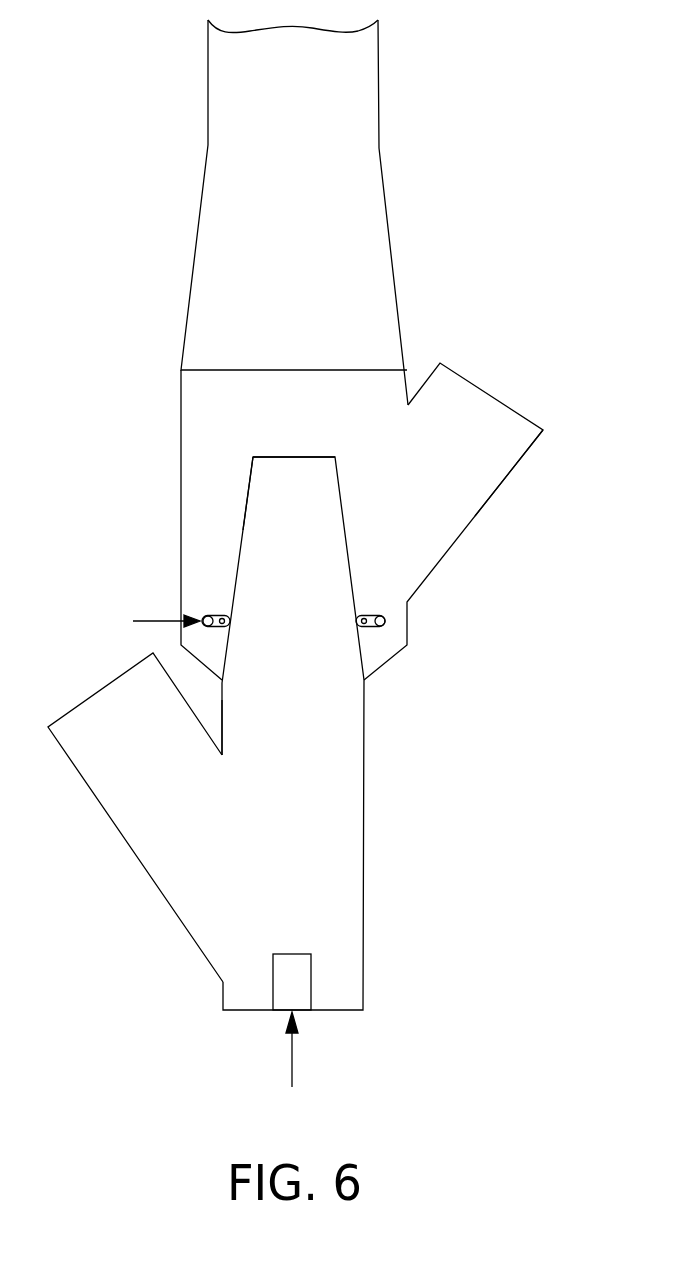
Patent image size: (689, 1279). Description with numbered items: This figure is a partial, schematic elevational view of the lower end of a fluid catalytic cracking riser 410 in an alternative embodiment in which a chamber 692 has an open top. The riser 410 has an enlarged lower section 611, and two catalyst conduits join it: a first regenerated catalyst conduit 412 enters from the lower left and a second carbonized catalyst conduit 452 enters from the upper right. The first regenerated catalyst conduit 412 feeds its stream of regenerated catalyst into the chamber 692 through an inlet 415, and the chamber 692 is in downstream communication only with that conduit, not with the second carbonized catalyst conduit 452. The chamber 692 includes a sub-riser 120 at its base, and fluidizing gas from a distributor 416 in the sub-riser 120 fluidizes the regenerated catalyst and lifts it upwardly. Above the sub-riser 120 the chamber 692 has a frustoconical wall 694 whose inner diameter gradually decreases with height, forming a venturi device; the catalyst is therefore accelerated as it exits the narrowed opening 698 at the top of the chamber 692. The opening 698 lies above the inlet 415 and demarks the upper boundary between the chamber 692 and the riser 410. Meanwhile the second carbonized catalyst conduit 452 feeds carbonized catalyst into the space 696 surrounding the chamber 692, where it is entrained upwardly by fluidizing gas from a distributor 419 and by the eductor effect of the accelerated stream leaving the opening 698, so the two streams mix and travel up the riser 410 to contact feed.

The riser 410 is at (208, 130).
The enlarged lower section 611 is at (178, 420).
The second carbonized catalyst conduit 452 is at (470, 525).
The chamber 692 is at (252, 558).
The opening 698 is at (300, 457).
The frustoconical wall 694 is at (243, 497).
The space 696 is at (392, 513).
The distributor 419 is at (367, 627).
The sub-riser 120 is at (350, 832).
The first regenerated catalyst conduit 412 is at (118, 837).
The inlet 415 is at (223, 830).
The distributor 416 is at (288, 987).